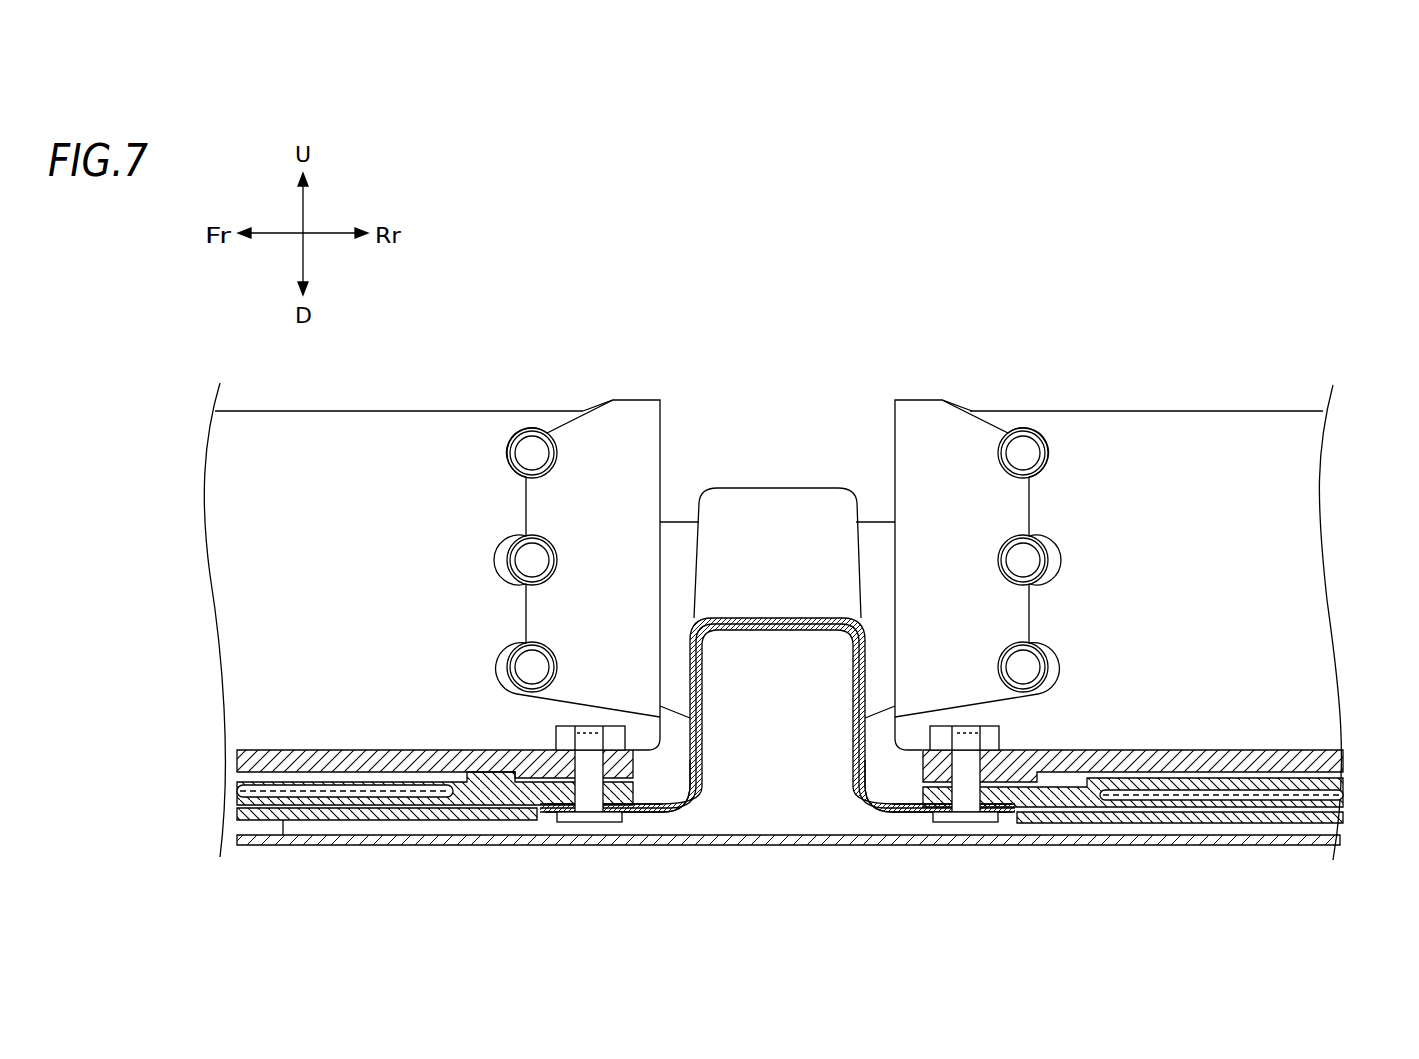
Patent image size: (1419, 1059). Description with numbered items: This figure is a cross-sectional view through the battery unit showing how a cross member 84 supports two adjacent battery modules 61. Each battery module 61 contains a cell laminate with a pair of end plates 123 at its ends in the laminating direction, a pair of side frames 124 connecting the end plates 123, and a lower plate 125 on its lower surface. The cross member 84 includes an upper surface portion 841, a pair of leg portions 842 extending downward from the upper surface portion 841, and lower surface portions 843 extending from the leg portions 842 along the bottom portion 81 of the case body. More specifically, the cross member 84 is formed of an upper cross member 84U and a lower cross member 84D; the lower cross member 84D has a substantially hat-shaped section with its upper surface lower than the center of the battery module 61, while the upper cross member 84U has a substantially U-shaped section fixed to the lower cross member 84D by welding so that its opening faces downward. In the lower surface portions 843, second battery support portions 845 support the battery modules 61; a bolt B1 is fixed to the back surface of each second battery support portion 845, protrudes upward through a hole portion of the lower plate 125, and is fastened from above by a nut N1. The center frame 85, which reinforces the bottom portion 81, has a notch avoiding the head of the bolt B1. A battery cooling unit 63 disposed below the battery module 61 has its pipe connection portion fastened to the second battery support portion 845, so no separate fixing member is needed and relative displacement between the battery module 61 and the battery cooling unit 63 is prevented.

The battery module 61 is at (484, 410).
The battery cooling unit 63 is at (237, 792).
The bottom portion 81 is at (1077, 846).
The cross member 84 is at (777, 590).
The upper cross member 84U is at (755, 617).
The lower cross member 84D is at (732, 652).
The upper surface portion 841 is at (783, 556).
The leg portion 842 is at (658, 814).
The lower surface portion 843 is at (777, 851).
The second battery support portion 845 is at (680, 744).
The center frame 85 is at (284, 836).
The end plate 123 is at (388, 452).
The side frame 124 is at (586, 440).
The lower plate 125 is at (237, 758).
The nut N1 is at (553, 738).
The bolt B1 is at (590, 824).